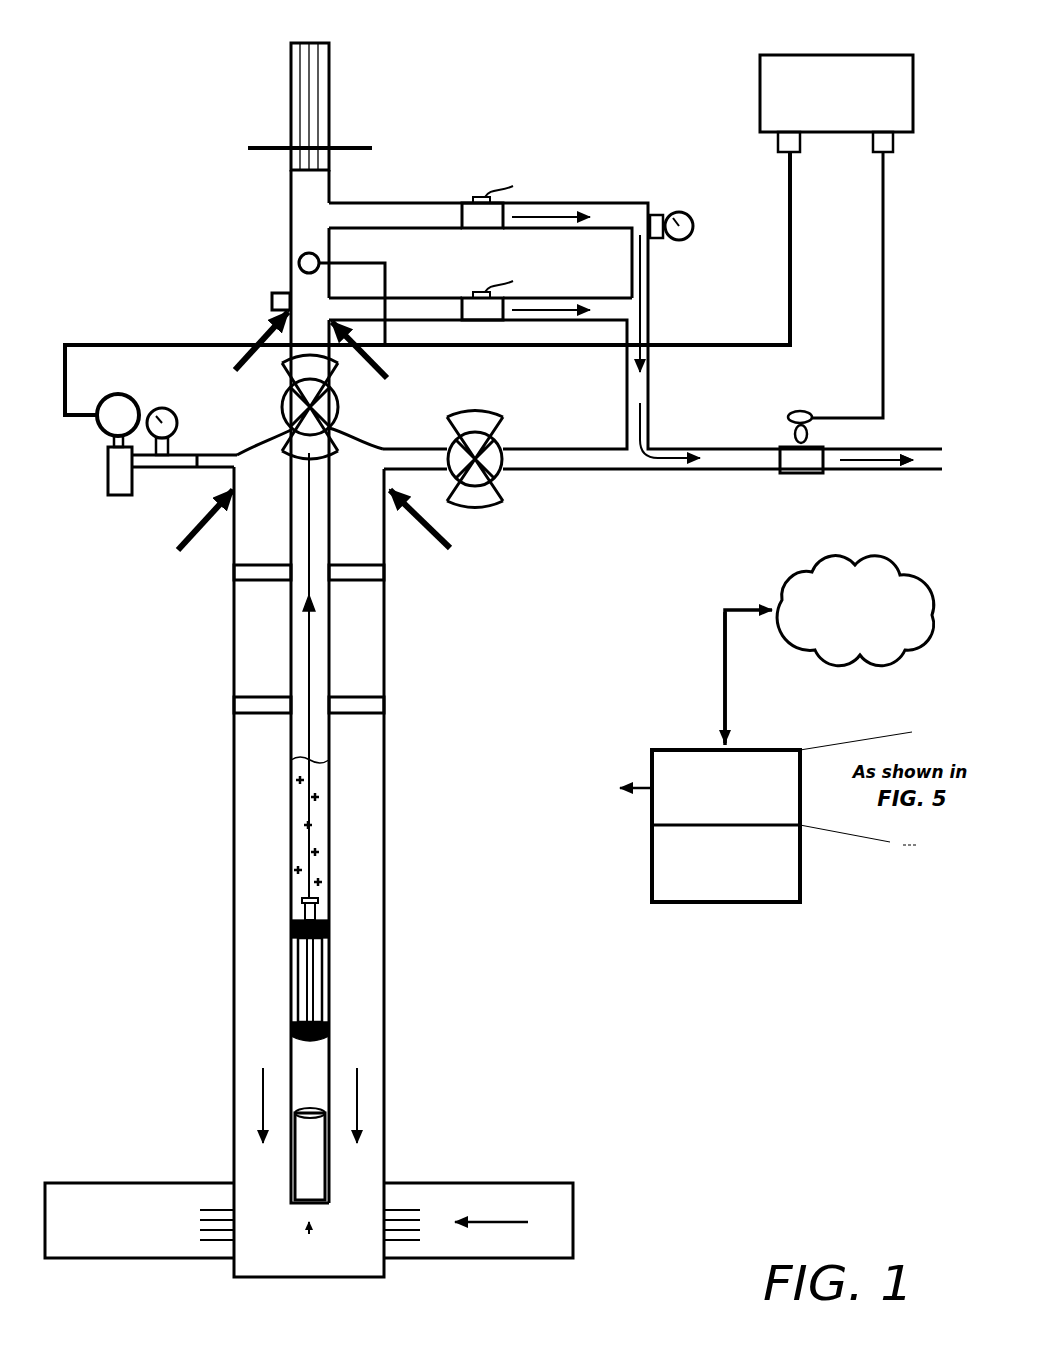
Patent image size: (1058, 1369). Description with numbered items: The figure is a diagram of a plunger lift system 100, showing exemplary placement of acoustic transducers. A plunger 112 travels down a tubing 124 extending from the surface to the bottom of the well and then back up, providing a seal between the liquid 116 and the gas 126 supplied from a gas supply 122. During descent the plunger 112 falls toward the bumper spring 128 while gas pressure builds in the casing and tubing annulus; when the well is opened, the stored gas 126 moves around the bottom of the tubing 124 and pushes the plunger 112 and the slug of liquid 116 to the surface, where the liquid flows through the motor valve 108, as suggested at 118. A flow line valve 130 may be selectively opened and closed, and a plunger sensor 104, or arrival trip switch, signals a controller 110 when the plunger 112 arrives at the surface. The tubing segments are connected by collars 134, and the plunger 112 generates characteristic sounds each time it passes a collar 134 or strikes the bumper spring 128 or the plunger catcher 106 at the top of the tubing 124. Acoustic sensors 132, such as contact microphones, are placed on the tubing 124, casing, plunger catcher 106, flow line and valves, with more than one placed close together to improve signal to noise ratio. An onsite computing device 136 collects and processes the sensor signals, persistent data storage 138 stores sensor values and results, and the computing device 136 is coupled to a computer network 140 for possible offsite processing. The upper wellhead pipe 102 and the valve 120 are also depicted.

The plunger lift system 100 is at (155, 722).
The wellhead tubing 102 is at (290, 108).
The plunger sensor 104 is at (300, 255).
The plunger catcher 106 is at (272, 300).
The motor valve 108 is at (800, 477).
The controller 110 is at (820, 53).
The plunger 112 is at (297, 977).
The liquid 116 is at (320, 833).
The flow through motor valve 118 is at (643, 308).
The valve 120 is at (503, 492).
The gas supply 122 is at (82, 420).
The tubing 124 is at (387, 970).
The gas 126 is at (358, 1088).
The bumper spring 128 is at (323, 1162).
The flow line valve 130 is at (340, 410).
The acoustic sensor 132 is at (373, 566).
The collar 134 is at (434, 212).
The computing device 136 is at (675, 748).
The data storage 138 is at (802, 865).
The computer network 140 is at (807, 570).